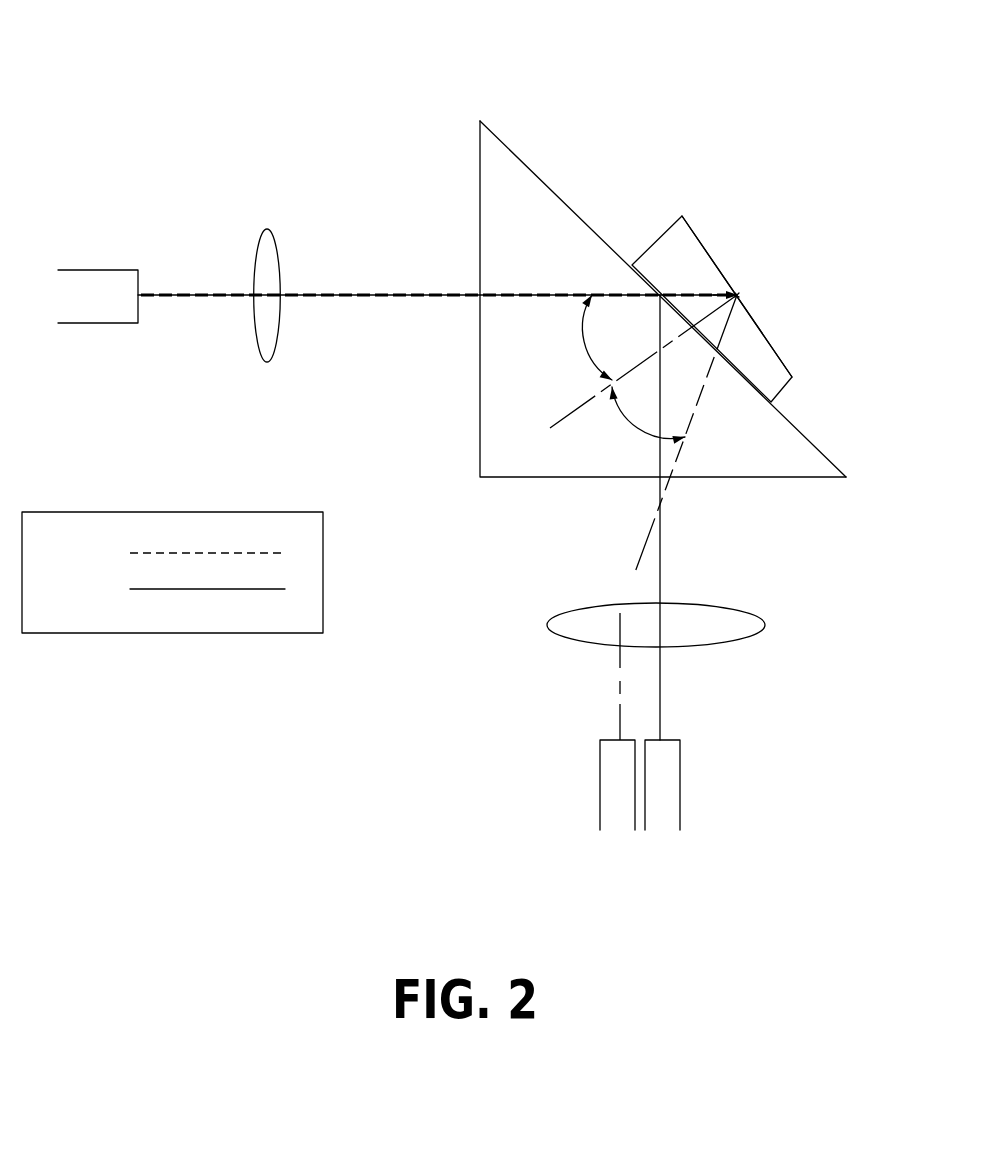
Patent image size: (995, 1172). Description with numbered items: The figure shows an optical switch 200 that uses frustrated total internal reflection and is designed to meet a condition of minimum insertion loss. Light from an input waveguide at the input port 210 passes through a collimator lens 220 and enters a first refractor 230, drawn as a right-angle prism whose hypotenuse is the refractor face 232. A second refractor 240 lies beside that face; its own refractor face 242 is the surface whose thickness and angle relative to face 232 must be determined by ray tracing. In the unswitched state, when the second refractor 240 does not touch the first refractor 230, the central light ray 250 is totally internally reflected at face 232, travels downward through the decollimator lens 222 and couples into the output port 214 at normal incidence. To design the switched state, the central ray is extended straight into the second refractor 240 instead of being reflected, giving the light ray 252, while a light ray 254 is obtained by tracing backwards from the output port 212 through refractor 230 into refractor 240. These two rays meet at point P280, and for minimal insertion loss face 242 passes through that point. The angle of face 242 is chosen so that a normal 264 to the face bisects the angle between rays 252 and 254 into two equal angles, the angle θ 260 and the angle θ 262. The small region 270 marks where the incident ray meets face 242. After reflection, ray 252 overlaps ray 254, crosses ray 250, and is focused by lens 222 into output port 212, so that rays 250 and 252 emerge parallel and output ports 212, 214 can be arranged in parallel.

The optical switch 200 is at (692, 68).
The input port 210 is at (110, 270).
The output port 212 is at (600, 773).
The output port 214 is at (682, 773).
The collimator lens 220 is at (277, 255).
The decollimator lens 222 is at (723, 605).
The first refractor 230 is at (507, 177).
The refractor face 232 is at (560, 197).
The second refractor 240 is at (683, 245).
The refractor face 242 is at (782, 357).
The central light ray 250 is at (203, 297).
The light ray 252 is at (168, 293).
The light ray 254 is at (647, 540).
The angle θ 260 is at (560, 337).
The angle θ 262 is at (624, 424).
The normal 264 is at (563, 415).
The incidence region 270 is at (713, 292).
The point P P280 is at (776, 298).